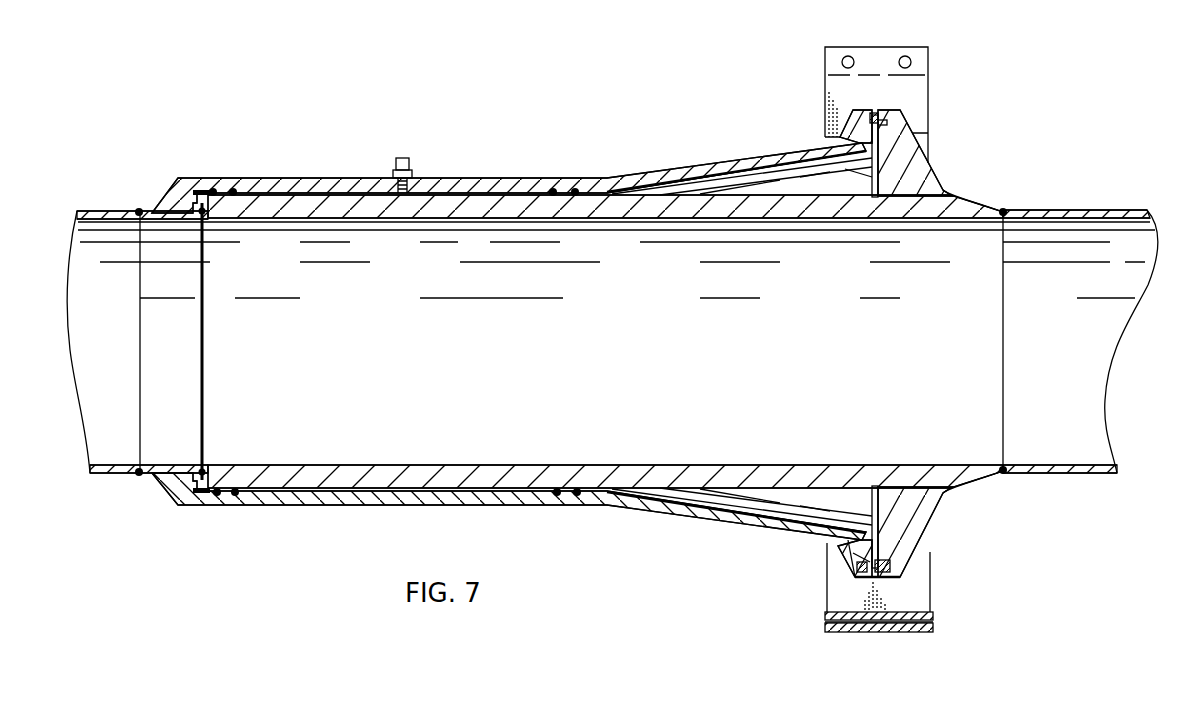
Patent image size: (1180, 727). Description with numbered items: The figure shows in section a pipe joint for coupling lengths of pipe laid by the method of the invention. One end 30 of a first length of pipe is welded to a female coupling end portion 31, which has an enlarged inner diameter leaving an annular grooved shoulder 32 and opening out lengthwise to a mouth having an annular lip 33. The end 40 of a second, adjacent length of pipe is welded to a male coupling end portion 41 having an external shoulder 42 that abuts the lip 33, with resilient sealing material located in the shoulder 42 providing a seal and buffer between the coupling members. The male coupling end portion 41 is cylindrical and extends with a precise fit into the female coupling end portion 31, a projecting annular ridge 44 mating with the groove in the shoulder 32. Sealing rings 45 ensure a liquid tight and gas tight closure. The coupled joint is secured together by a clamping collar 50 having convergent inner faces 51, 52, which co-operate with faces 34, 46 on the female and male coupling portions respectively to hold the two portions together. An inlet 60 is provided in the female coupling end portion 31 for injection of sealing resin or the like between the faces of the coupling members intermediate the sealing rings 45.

The end of first length of pipe 30 is at (124, 448).
The end of second length of pipe 40 is at (1062, 448).
The female coupling end portion 31 is at (167, 478).
The annular grooved shoulder 32 is at (192, 479).
The projecting annular ridge 44 is at (203, 486).
The sealing rings 45 is at (235, 489).
The inlet 60 is at (393, 173).
The face on male coupling portion 46 is at (910, 548).
The male coupling end portion 41 is at (933, 505).
The external shoulder 42 is at (878, 525).
The convergent inner face 52 is at (897, 568).
The face on female coupling portion 34 is at (858, 562).
The annular lip 33 is at (853, 563).
The convergent inner face 51 is at (853, 569).
The clamping collar 50 is at (913, 600).